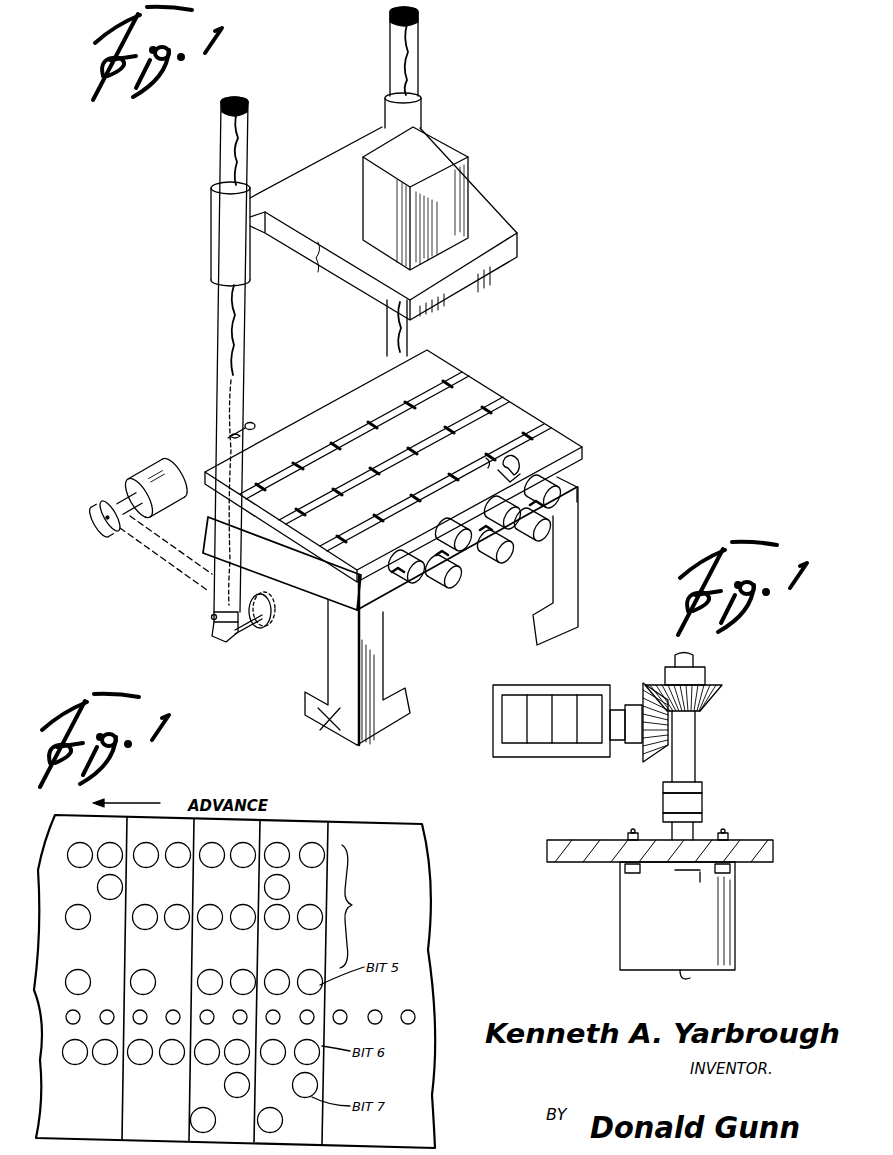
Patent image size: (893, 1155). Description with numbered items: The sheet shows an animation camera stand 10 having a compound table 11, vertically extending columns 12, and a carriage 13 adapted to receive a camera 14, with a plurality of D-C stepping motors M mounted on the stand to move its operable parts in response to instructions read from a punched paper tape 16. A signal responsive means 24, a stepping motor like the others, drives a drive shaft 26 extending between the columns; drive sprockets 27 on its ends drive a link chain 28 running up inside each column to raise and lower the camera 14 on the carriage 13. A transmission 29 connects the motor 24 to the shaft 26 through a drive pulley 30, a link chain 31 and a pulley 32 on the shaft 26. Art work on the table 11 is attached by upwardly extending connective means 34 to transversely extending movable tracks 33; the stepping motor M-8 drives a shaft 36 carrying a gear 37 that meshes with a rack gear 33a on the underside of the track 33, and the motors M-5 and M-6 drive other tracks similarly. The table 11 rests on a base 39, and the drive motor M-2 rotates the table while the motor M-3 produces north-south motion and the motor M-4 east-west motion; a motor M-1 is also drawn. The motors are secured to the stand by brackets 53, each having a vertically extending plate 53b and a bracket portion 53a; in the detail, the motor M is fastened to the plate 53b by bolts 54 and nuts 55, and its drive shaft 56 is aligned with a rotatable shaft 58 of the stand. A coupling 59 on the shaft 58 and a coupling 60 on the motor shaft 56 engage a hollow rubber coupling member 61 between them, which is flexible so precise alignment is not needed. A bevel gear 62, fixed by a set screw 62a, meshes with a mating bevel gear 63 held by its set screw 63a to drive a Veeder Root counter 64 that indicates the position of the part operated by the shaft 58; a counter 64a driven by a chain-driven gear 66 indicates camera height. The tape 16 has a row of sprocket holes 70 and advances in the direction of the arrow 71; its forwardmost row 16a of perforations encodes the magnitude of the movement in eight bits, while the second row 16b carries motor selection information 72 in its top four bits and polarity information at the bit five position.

In FIG. 1, the camera stand 10 is at (195, 291).
In FIG. 1, the compound table 11 is at (433, 365).
In FIG. 1, the vertically extending columns 12 is at (386, 325).
In FIG. 1, the carriage 13 is at (518, 250).
In FIG. 1, the camera 14 is at (455, 155).
In FIG. 3, the punched paper tape 16 is at (400, 825).
In FIG. 3, the forwardmost row of perforations 16a is at (278, 836).
In FIG. 3, the second row of instructional bits 16b is at (314, 836).
In FIG. 1, the signal responsive means 24 is at (135, 462).
In FIG. 1, the drive shaft 26 is at (241, 636).
In FIG. 1, the drive sprockets 27 is at (212, 636).
In FIG. 1, the link chain 28 is at (212, 617).
In FIG. 1, the transmission 29 is at (155, 567).
In FIG. 1, the drive pulley 30 is at (98, 512).
In FIG. 1, the link chain 31 is at (130, 550).
In FIG. 1, the pulley 32 is at (262, 628).
In FIG. 1, the movable tracks 33 is at (540, 423).
In FIG. 1, the rack gear 33a is at (486, 462).
In FIG. 1, the connective means 34 is at (452, 395).
In FIG. 1, the shaft 36 is at (522, 466).
In FIG. 1, the gear 37 is at (498, 478).
In FIG. 1, the base 39 is at (337, 718).
In FIG. 1, the brackets 53 is at (437, 580).
In FIG. 1, the base plate edge 53a is at (385, 578).
In FIG. 2, the vertically extending plate 53b is at (550, 846).
In FIG. 2, the bolts 54 is at (728, 837).
In FIG. 2, the nuts 55 is at (630, 836).
In FIG. 2, the drive shaft 56 is at (700, 830).
In FIG. 2, the rotatable shaft 58 is at (696, 728).
In FIG. 2, the coupling 59 is at (663, 790).
In FIG. 2, the coupling 60 is at (663, 816).
In FIG. 2, the hollow rubber coupling member 61 is at (703, 790).
In FIG. 2, the bevel gear 62 is at (718, 690).
In FIG. 2, the set screw 62a is at (705, 680).
In FIG. 2, the mating bevel gear 63 is at (697, 750).
In FIG. 2, the set screw 63a is at (633, 722).
In FIG. 1, the Veeder Root counter 64 is at (492, 725).
In FIG. 1, the counter 64a is at (254, 424).
In FIG. 1, the gear 66 is at (233, 438).
In FIG. 3, the sprocket holes 70 is at (408, 1010).
In FIG. 3, the arrow 71 is at (125, 801).
In FIG. 3, the motor selection information 72 is at (360, 906).
In FIG. 1, the D-C stepping motors M is at (450, 648).
In FIG. 2, the D-C stepping motors M is at (738, 920).
In FIG. 1, the motor 1 M-1 is at (515, 532).
In FIG. 1, the drive motor M-2 is at (460, 590).
In FIG. 1, the motor M-3 is at (500, 566).
In FIG. 1, the motor M-4 is at (555, 520).
In FIG. 1, the track drive motor M-5 is at (410, 555).
In FIG. 1, the track drive motor M-6 is at (452, 532).
In FIG. 1, the D-C stepping motor M-8 is at (560, 487).